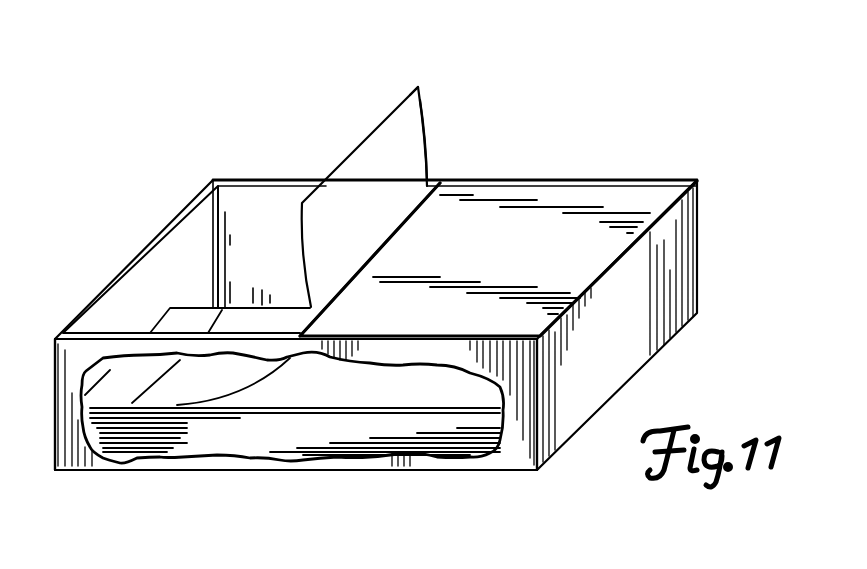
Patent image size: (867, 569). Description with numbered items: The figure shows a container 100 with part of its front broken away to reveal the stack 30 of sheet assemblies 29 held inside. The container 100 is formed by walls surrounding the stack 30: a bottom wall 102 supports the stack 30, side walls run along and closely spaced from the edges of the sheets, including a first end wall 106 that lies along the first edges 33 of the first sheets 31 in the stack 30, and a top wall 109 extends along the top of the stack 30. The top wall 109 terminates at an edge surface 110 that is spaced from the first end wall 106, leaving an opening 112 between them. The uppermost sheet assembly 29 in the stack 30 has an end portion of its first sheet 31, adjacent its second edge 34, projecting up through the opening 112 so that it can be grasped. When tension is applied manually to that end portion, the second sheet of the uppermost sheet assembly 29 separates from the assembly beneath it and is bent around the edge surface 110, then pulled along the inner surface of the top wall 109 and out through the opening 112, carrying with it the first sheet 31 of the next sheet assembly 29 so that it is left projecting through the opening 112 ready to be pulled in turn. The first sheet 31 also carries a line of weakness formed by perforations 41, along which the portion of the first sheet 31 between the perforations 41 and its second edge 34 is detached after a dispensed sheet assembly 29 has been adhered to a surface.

The container 100 is at (614, 150).
The bottom wall 102 is at (500, 470).
The first end wall 106 is at (143, 273).
The top wall 109 is at (524, 270).
The edge surface 110 is at (428, 178).
The opening 112 is at (364, 253).
The second edge 34 is at (373, 128).
The first sheet 31 is at (417, 85).
The sheet assembly 29 is at (428, 131).
The stack of sheet assemblies 30 is at (182, 434).
The first edge 33 is at (165, 313).
The perforations 41 is at (228, 316).